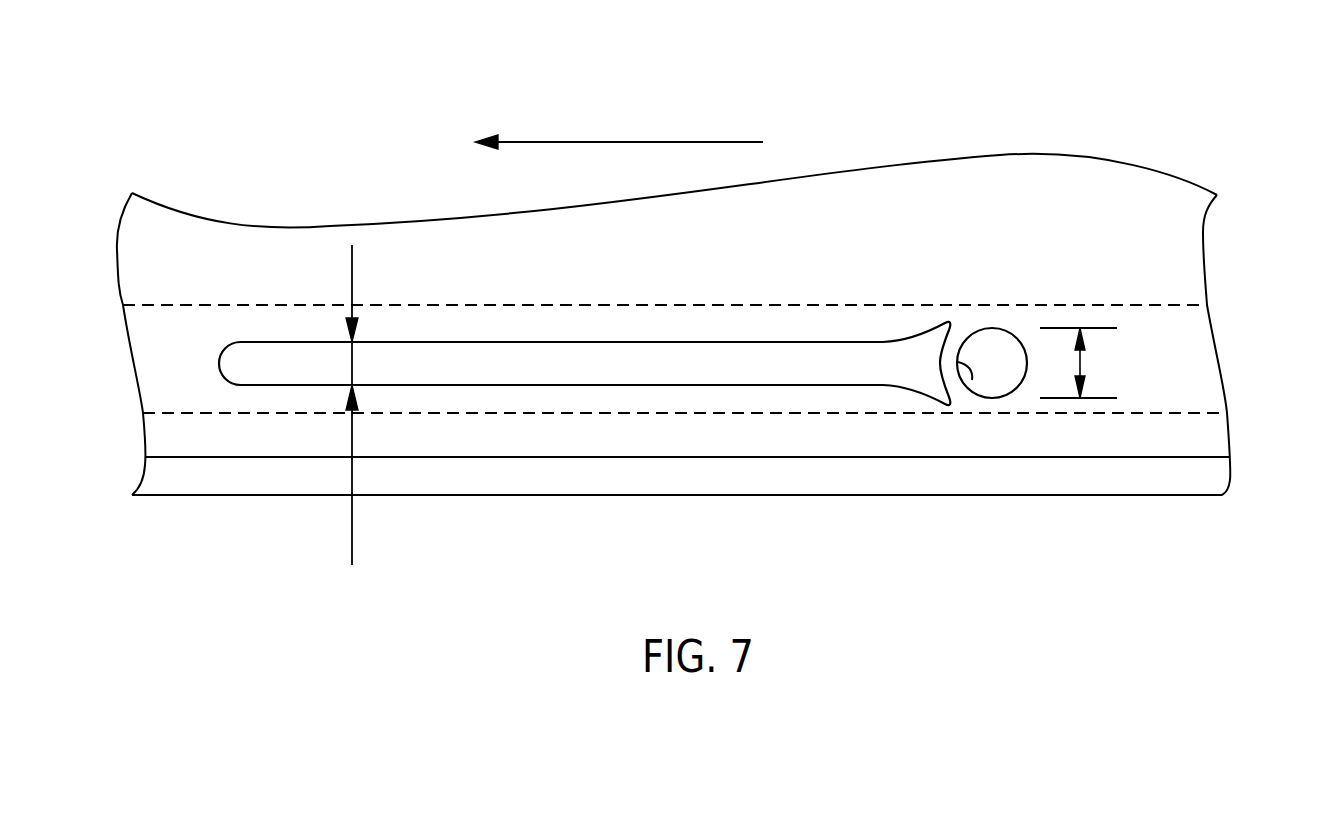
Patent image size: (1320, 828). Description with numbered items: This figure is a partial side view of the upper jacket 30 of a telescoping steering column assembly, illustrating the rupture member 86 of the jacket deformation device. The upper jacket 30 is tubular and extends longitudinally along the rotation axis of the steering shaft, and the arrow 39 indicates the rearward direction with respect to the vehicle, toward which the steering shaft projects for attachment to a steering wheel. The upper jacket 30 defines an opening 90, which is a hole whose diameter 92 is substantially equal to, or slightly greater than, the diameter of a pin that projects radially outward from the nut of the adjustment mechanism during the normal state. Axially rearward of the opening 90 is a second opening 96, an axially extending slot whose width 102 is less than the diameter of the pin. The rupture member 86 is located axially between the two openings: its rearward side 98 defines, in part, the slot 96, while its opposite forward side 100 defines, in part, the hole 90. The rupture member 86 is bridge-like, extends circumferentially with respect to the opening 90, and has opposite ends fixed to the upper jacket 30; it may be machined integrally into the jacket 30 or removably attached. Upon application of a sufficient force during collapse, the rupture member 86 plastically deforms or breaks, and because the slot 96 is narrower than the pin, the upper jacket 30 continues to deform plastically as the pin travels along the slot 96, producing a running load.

The upper jacket 30 is at (1207, 231).
The arrow indicating rearward direction 39 is at (603, 141).
The rupture member 86 is at (938, 358).
The opening 90 is at (992, 368).
The diameter of the opening 92 is at (1087, 362).
The opening 96 is at (622, 365).
The rearward side 98 is at (940, 400).
The forward side 100 is at (972, 380).
The width of the slot 102 is at (352, 272).